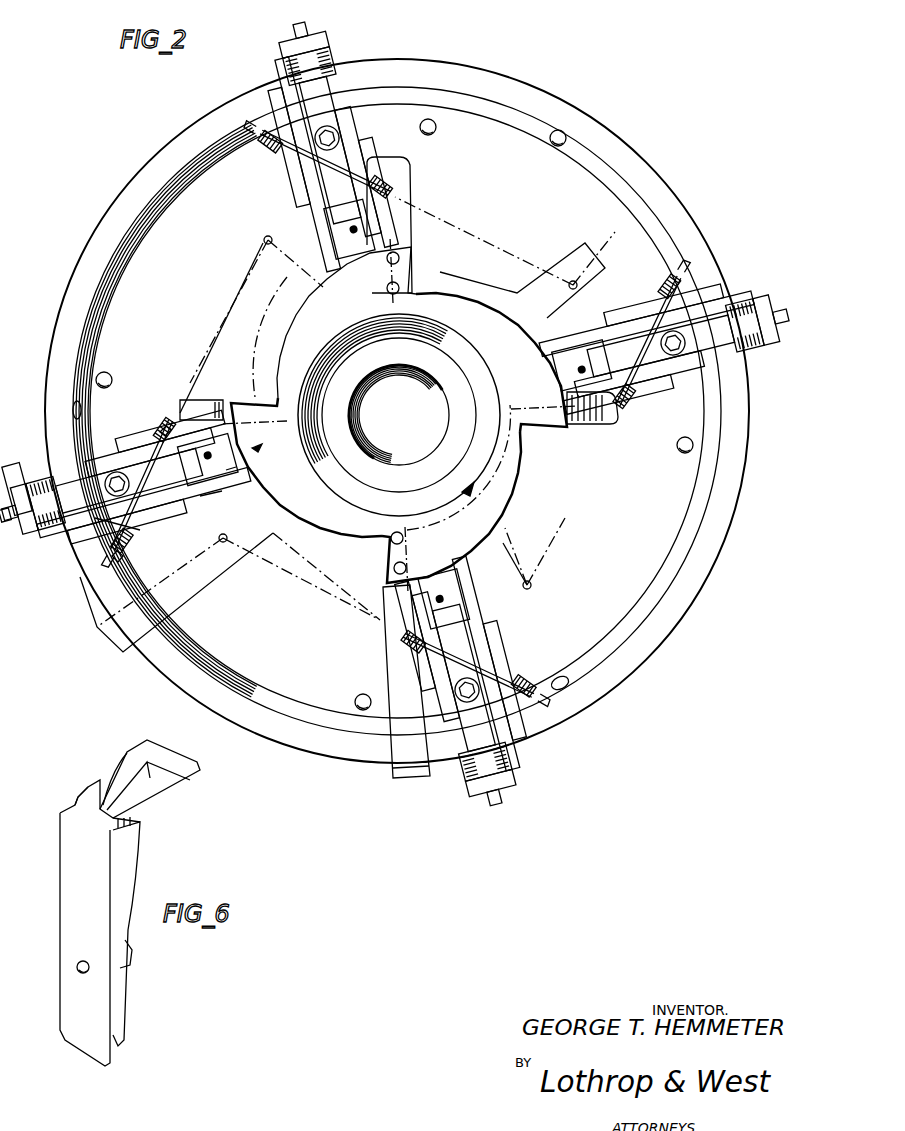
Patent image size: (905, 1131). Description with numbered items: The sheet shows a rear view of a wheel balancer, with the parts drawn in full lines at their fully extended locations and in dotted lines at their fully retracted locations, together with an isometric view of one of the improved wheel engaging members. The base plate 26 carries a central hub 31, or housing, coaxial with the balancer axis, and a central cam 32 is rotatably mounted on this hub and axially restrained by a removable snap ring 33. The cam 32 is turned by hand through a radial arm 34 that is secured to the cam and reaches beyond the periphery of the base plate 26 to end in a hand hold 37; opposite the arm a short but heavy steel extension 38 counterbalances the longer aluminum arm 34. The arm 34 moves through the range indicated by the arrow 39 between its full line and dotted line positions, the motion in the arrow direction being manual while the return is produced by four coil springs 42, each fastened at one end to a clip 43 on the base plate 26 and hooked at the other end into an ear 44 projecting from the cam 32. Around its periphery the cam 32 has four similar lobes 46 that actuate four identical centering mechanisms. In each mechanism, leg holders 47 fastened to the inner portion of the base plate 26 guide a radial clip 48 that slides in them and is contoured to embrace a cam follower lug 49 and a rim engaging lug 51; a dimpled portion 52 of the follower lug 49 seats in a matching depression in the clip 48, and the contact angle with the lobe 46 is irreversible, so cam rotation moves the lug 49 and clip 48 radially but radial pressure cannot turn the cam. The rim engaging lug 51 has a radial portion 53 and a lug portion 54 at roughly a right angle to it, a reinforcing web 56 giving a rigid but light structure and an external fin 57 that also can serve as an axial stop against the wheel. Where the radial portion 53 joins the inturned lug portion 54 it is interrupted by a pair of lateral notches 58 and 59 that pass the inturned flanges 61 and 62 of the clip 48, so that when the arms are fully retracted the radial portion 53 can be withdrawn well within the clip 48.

In FIG. 2, the base plate 26 is at (250, 653).
In FIG. 2, the central hub 31 is at (375, 472).
In FIG. 2, the central cam 32 is at (306, 514).
In FIG. 2, the snap ring 33 is at (408, 492).
In FIG. 2, the radial arm 34 is at (395, 663).
In FIG. 2, the hand hold 37 is at (413, 778).
In FIG. 2, the extension 38 is at (398, 181).
In FIG. 2, the arrow 39 is at (290, 760).
In FIG. 2, the coil springs 42 is at (168, 428).
In FIG. 2, the clip 43 is at (125, 568).
In FIG. 2, the ear 44 is at (203, 413).
In FIG. 2, the lobes 46 is at (327, 536).
In FIG. 2, the leg holders 47 is at (108, 455).
In FIG. 2, the radial clips 48 is at (217, 493).
In FIG. 2, the cam follower lug 49 is at (233, 475).
In FIG. 2, the rim engaging lug 51 is at (55, 500).
In FIG. 2, the dimpled portion 52 is at (230, 426).
In FIG. 2, the inturned flange 61 is at (77, 475).
In FIG. 2, the inturned flange 62 is at (92, 513).
In FIG. 6, the radial portion 53 is at (62, 917).
In FIG. 6, the lug portion 54 is at (185, 783).
In FIG. 6, the reinforcing web 56 is at (132, 855).
In FIG. 6, the external fin 57 is at (127, 760).
In FIG. 6, the lateral notch 58 is at (88, 790).
In FIG. 6, the lateral notch 59 is at (135, 822).